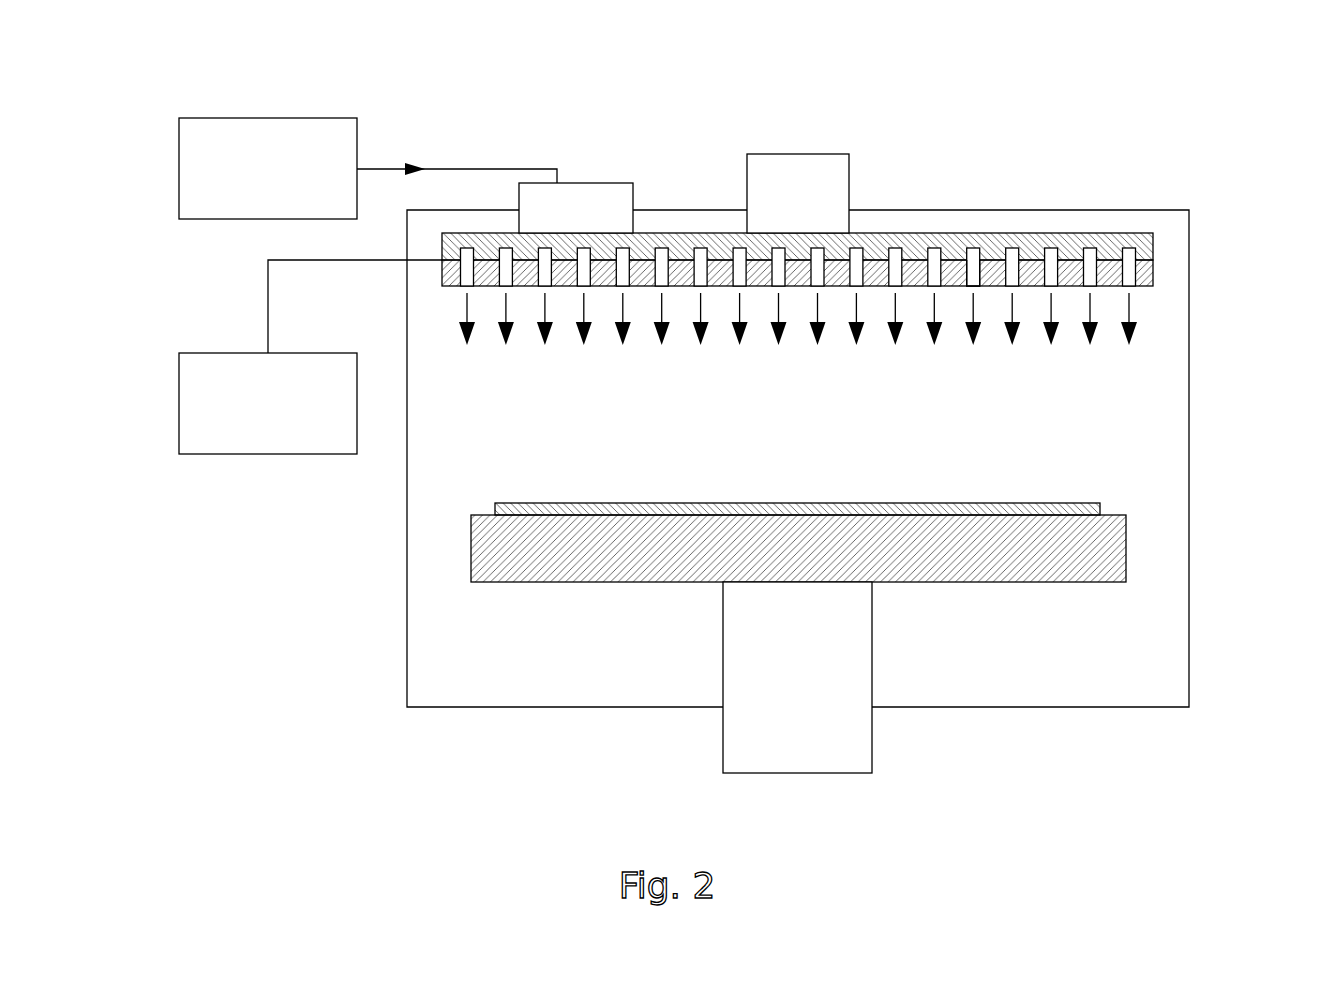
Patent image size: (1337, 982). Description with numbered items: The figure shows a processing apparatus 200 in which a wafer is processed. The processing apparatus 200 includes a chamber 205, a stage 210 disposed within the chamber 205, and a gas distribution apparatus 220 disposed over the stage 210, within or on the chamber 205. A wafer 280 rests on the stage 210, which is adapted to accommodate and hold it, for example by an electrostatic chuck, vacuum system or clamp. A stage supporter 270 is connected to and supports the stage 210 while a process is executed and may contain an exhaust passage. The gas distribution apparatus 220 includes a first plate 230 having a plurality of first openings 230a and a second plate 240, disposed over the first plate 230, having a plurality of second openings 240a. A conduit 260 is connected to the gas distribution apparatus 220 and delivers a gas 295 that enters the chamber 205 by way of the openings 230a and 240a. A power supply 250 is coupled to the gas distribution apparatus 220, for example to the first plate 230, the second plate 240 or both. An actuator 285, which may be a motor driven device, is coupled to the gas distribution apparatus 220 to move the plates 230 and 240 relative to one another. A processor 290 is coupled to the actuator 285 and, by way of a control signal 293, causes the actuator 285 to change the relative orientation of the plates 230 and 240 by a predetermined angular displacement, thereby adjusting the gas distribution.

The processing apparatus 200 is at (1222, 97).
The chamber 205 is at (1142, 410).
The stage 210 is at (1113, 552).
The gas distribution apparatus 220 is at (861, 269).
The first plate 230 is at (1146, 273).
The first openings 230a is at (975, 277).
The second plate 240 is at (1142, 247).
The second openings 240a is at (972, 250).
The power supply 250 is at (263, 455).
The conduit 260 is at (798, 154).
The stage supporter 270 is at (853, 742).
The wafer 280 is at (1092, 512).
The actuator 285 is at (588, 183).
The processor 290 is at (267, 118).
The control signal 293 is at (447, 150).
The gas 295 is at (1133, 306).